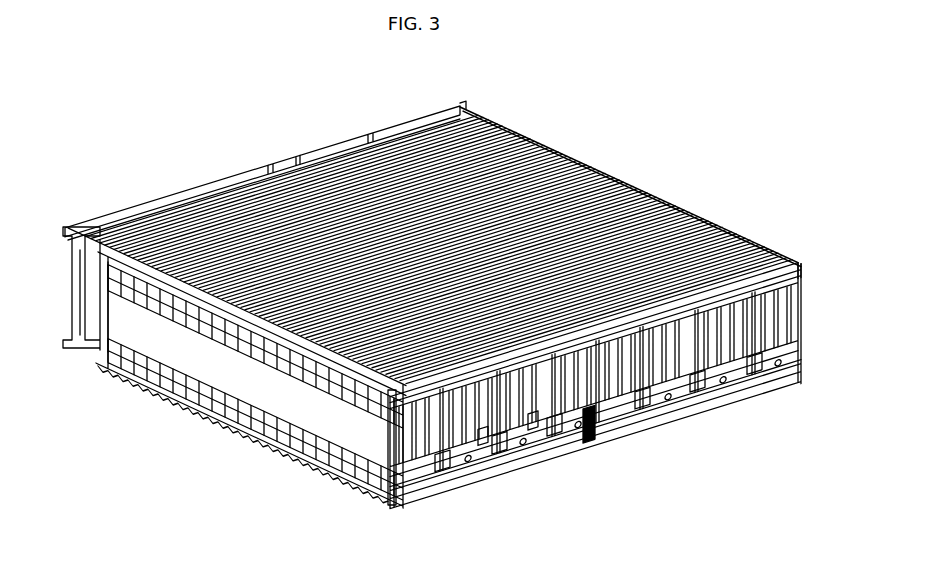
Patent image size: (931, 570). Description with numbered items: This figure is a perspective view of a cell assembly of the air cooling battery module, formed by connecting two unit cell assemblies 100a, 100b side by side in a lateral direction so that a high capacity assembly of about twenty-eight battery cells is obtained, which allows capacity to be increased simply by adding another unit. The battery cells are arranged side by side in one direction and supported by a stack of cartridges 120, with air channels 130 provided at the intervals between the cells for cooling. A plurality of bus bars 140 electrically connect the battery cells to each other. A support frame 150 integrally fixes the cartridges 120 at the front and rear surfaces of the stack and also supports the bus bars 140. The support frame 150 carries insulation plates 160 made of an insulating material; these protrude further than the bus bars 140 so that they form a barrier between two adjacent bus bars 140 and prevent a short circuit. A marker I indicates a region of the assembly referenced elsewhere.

The first frame rail 100a is at (202, 180).
The second frame rail 100b is at (372, 121).
The cartridge 120 is at (721, 267).
The air channel 130 is at (477, 455).
The bus bar 140 is at (461, 438).
The support frame 150 is at (90, 303).
The insulation plate 160 is at (484, 422).
The section line I is at (502, 475).